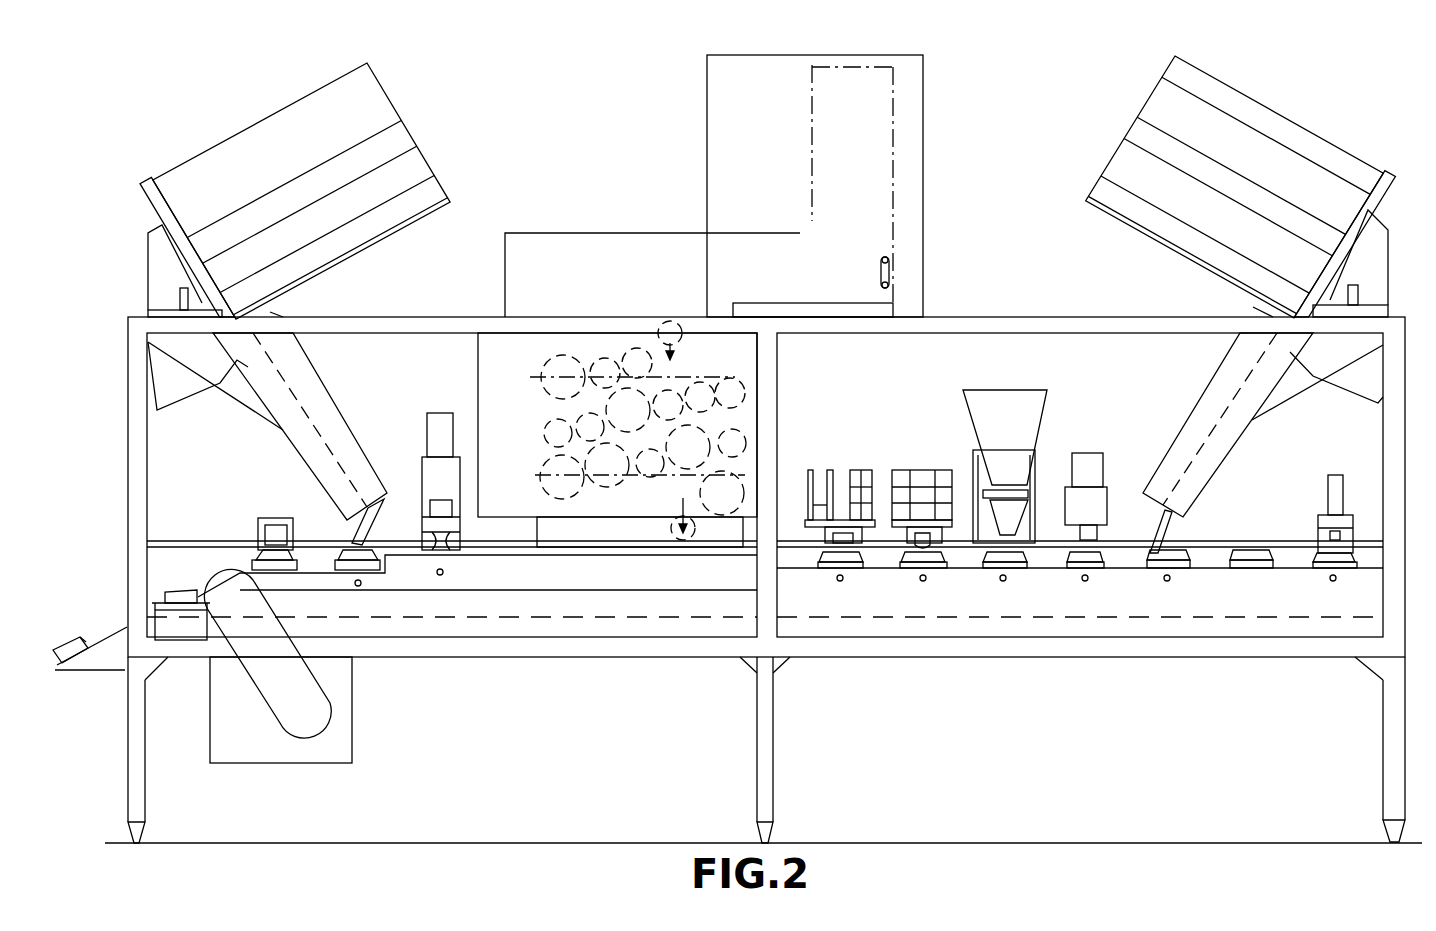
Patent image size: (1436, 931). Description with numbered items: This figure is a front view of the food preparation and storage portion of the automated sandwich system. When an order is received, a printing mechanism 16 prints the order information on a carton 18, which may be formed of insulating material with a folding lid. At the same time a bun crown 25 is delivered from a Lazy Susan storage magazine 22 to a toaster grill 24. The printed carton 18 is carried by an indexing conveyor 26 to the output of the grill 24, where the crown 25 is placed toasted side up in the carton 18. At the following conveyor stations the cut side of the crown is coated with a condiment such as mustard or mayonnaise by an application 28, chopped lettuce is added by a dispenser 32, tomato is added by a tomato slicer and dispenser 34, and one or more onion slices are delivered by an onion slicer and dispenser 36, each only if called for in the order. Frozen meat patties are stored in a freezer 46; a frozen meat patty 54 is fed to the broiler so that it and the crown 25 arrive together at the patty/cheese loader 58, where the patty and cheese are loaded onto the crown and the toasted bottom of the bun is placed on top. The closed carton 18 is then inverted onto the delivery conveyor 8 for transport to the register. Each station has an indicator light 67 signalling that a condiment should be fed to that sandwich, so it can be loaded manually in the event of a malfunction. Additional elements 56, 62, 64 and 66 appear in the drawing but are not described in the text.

The delivery conveyor 8 is at (178, 620).
The printing mechanism 16 is at (1311, 505).
The carton 18 is at (258, 535).
The Lazy Susan storage magazine 22 is at (1302, 93).
The grill 24 is at (1280, 460).
The bun crown 25 is at (1160, 540).
The indexing conveyor 26 is at (1147, 571).
The application 28 is at (1149, 458).
The dispenser 32 is at (1088, 430).
The tomato slicer and dispenser 34 is at (962, 459).
The onion slicer and dispenser 36 is at (891, 459).
The freezer 46 is at (702, 139).
The frozen meat patty 54 is at (663, 322).
The lid supply panel 56 is at (756, 394).
The patty/cheese loader 58 is at (512, 432).
The lid transfer gate 62 is at (352, 538).
The lid magazine 64 is at (448, 108).
The lid feed chute 66 is at (358, 367).
The indicator light 67 is at (843, 581).